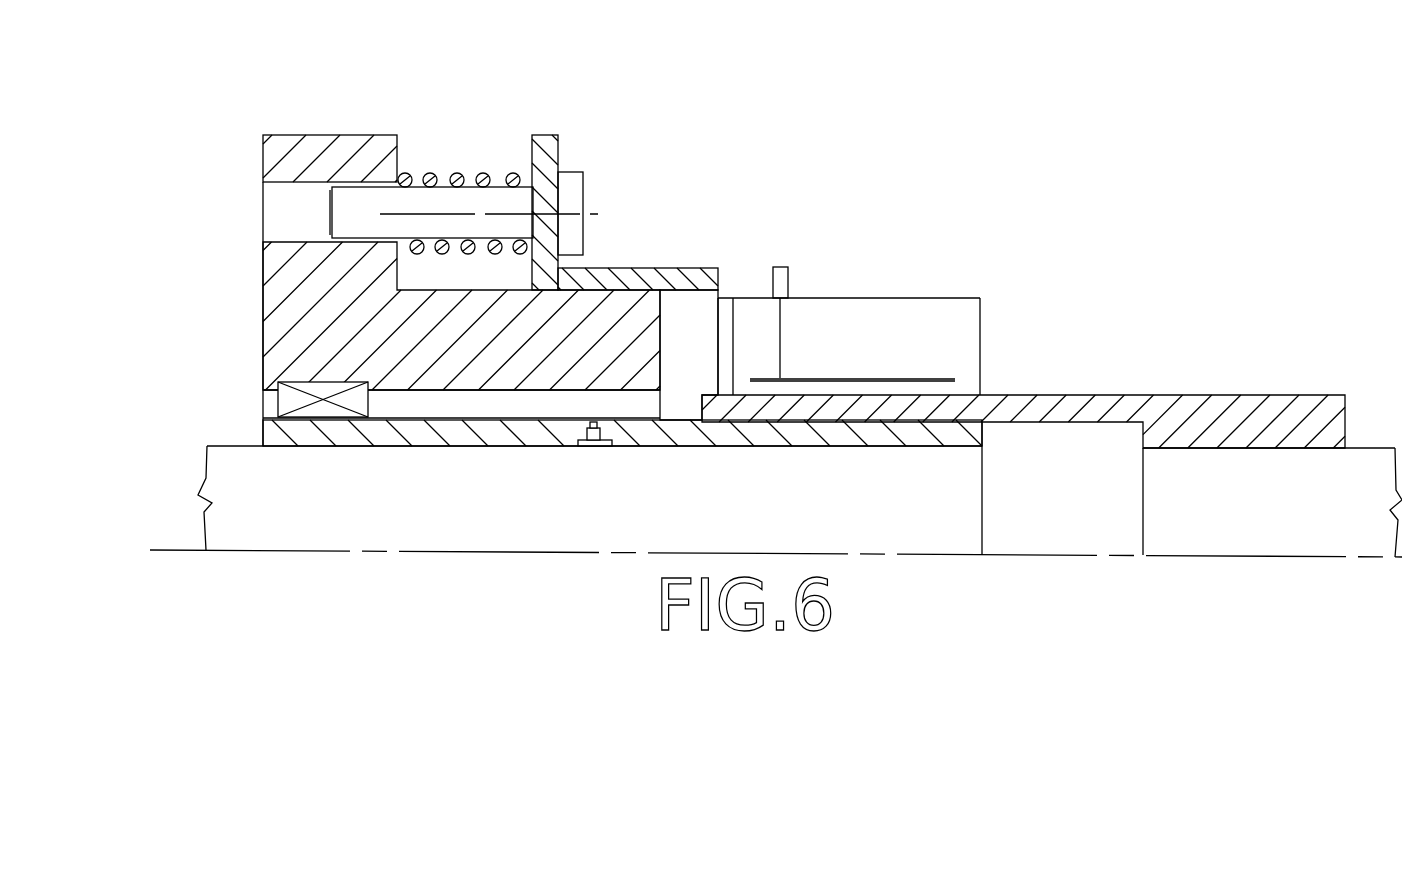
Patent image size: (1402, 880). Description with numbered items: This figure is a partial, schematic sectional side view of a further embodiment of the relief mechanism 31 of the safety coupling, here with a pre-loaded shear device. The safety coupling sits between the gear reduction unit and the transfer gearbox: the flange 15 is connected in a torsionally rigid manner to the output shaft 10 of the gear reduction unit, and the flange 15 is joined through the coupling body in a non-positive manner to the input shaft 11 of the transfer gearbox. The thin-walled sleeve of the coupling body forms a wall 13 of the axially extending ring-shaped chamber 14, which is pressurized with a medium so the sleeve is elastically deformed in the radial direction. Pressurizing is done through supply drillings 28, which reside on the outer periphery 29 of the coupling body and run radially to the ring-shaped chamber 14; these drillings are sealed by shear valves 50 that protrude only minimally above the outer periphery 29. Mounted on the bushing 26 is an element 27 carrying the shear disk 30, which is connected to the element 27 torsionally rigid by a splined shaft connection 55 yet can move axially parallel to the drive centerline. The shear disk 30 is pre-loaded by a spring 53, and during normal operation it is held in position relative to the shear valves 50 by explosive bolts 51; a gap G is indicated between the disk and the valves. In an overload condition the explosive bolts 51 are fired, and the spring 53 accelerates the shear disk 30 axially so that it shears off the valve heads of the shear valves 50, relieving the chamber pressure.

The output shaft 10 is at (1328, 518).
The input shaft 11 is at (522, 518).
The wall 13 is at (848, 380).
The ring-shaped chamber 14 is at (803, 379).
The flange 15 is at (1224, 412).
The bushing 26 is at (970, 436).
The element 27 is at (263, 431).
The supply drillings 28 is at (783, 318).
The outer periphery 29 is at (950, 297).
The shear disk 30 is at (673, 268).
The relief mechanism 31 is at (545, 131).
The shear valves 50 is at (777, 267).
The explosive bolts 51 is at (585, 178).
The spring 53 is at (460, 172).
The splined shaft connection 55 is at (608, 283).
The gap G is at (878, 286).